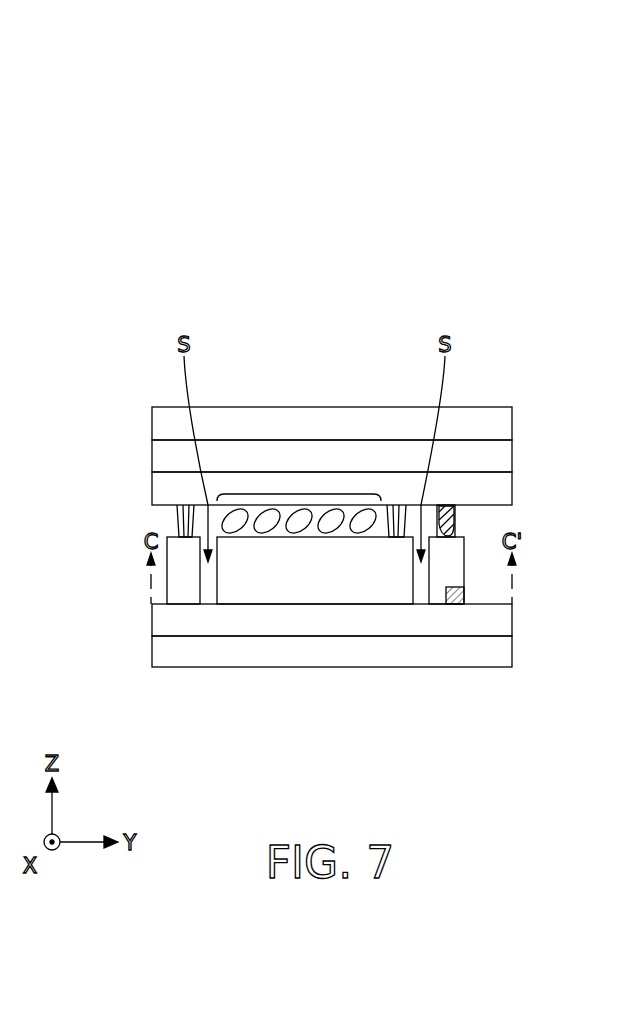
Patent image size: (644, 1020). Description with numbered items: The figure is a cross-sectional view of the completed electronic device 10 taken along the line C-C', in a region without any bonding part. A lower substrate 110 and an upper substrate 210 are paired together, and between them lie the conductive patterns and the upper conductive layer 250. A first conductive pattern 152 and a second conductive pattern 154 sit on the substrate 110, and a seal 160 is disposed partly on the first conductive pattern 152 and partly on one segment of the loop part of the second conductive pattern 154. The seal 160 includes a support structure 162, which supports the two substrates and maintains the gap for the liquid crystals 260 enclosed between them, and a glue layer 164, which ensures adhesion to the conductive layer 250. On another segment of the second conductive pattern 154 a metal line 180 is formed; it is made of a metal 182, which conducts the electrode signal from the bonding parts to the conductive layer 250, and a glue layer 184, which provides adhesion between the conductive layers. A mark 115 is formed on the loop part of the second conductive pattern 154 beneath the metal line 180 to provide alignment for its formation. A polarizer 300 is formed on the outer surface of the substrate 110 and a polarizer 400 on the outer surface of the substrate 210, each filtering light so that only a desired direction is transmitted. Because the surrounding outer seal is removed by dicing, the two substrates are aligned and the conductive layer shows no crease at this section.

The electronic device 10 is at (70, 126).
The substrate 110 is at (505, 621).
The mark 115 is at (452, 604).
The first conductive pattern 152 is at (307, 585).
The second conductive pattern 154 is at (185, 590).
The seal 160 is at (406, 70).
The support structure 162 is at (398, 537).
The glue layer 164 is at (178, 514).
The metal line 180 is at (586, 70).
The metal 182 is at (445, 510).
The glue layer 184 is at (453, 514).
The substrate 210 is at (160, 457).
The conductive layer 250 is at (160, 490).
The liquid crystals 260 is at (301, 494).
The polarizer 300 is at (505, 653).
The polarizer 400 is at (160, 424).